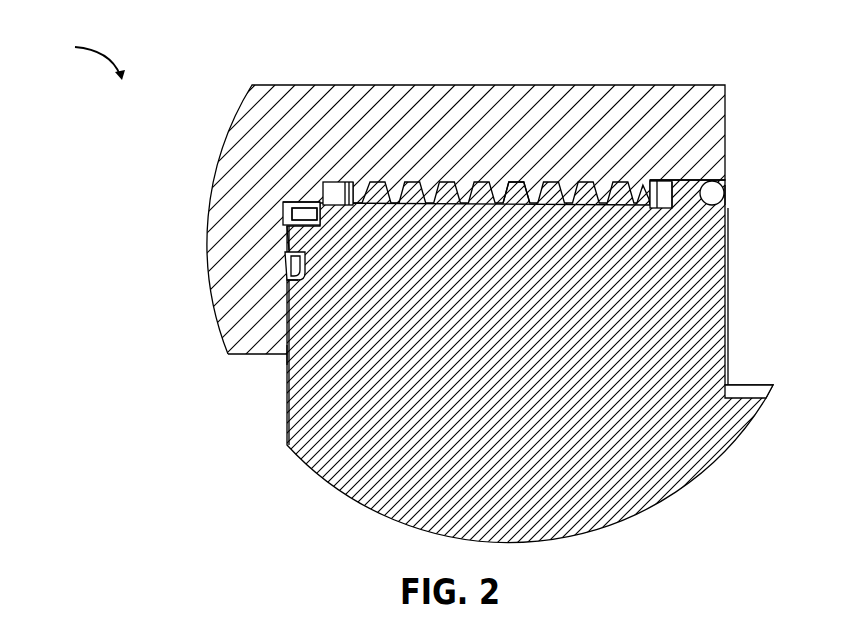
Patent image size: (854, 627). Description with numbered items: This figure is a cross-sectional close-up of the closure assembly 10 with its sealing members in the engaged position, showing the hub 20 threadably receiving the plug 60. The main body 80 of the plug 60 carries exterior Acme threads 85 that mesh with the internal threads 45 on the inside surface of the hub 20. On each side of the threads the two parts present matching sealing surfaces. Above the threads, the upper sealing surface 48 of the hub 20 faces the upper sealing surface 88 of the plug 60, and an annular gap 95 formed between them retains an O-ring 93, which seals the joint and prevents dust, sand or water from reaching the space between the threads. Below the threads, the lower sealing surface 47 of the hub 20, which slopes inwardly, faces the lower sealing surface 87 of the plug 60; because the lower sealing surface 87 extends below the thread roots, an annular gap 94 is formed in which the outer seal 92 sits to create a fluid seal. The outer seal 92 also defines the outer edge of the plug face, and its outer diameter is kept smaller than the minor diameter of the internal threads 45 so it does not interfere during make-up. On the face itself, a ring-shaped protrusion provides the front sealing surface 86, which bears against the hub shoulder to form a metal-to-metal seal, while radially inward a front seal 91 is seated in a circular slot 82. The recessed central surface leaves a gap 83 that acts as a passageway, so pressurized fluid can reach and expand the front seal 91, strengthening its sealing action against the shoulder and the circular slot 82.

The closure assembly 10 is at (83, 58).
The hub 20 is at (209, 127).
The internal threads 45 is at (433, 190).
The lower sealing surface 47 is at (319, 206).
The upper sealing surface 48 is at (726, 183).
The plug 60 is at (756, 327).
The main body 80 is at (598, 240).
The circular slot 82 is at (290, 279).
The gap 83 is at (283, 361).
The exterior Acme threads 85 is at (521, 190).
The front sealing surface 86 is at (285, 242).
The lower sealing surface 87 is at (285, 228).
The upper sealing surface 88 is at (703, 201).
The front seal 91 is at (285, 260).
The outer seal 92 is at (305, 203).
The O-ring 93 is at (723, 188).
The annular gap 94 is at (286, 211).
The annular gap 95 is at (742, 201).